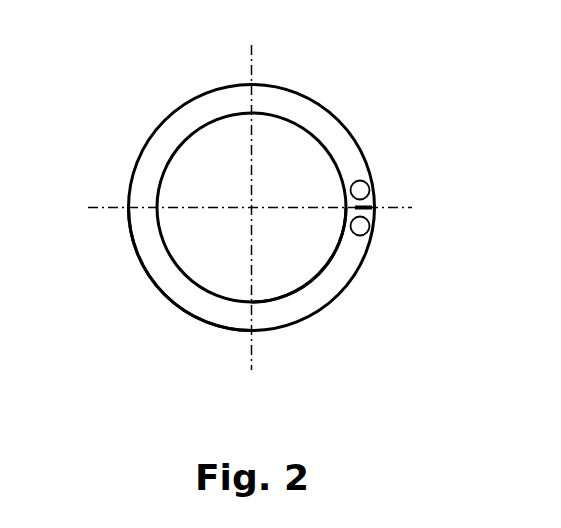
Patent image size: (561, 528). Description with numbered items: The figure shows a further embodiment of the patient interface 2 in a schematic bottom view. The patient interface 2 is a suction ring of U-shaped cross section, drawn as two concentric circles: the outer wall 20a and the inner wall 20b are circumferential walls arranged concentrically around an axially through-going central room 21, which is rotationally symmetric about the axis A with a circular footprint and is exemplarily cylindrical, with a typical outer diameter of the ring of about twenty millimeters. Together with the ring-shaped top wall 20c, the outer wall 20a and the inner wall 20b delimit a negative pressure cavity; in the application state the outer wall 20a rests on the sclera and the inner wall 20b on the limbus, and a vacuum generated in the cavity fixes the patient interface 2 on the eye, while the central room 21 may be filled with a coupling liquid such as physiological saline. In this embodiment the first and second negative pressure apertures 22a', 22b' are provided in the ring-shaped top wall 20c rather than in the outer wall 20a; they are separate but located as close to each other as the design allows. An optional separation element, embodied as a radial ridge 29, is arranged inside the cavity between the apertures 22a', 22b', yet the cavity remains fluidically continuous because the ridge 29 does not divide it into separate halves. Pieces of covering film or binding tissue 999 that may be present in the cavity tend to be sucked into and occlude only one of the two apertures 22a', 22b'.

The patient interface 2 is at (170, 76).
The outer wall 20a is at (222, 330).
The inner wall 20b is at (296, 291).
The ring-shaped top wall 20c is at (152, 168).
The central room 21 is at (283, 143).
The first negative pressure aperture 22a' is at (402, 160).
The second negative pressure aperture 22b' is at (385, 265).
The radial ridge 29 is at (375, 208).
The axis A is at (259, 217).
The binding tissue 999 is at (377, 365).